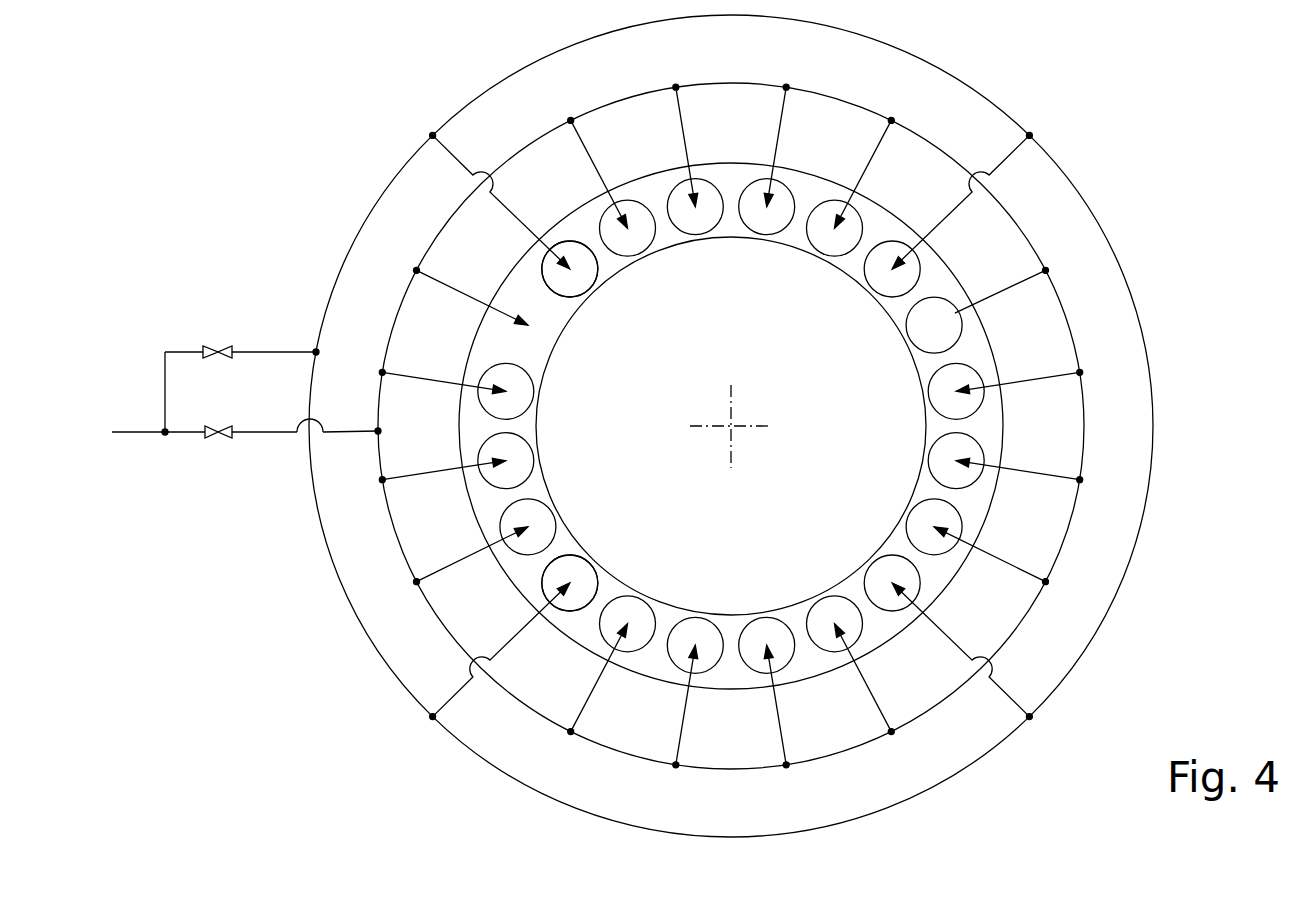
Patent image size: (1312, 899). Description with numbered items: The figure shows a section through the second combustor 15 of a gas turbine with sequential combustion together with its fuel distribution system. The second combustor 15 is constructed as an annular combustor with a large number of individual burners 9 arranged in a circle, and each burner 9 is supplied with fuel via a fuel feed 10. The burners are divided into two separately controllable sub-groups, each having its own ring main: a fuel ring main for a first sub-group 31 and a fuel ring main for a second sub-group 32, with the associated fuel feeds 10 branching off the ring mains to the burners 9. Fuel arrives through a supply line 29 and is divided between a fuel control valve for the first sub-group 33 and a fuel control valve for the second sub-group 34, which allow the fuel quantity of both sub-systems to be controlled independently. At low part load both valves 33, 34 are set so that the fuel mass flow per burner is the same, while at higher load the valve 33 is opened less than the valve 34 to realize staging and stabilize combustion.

The burner 9 is at (937, 327).
The fuel feed 10 is at (452, 306).
The second combustor 15 is at (885, 628).
The fuel feed line 29 is at (231, 397).
The fuel ring main for a first sub-group 31 is at (398, 545).
The fuel ring main for a second sub-group 32 is at (362, 630).
The fuel control valve for the first sub-group 33 is at (217, 348).
The fuel control valve for the second sub-group 34 is at (218, 440).